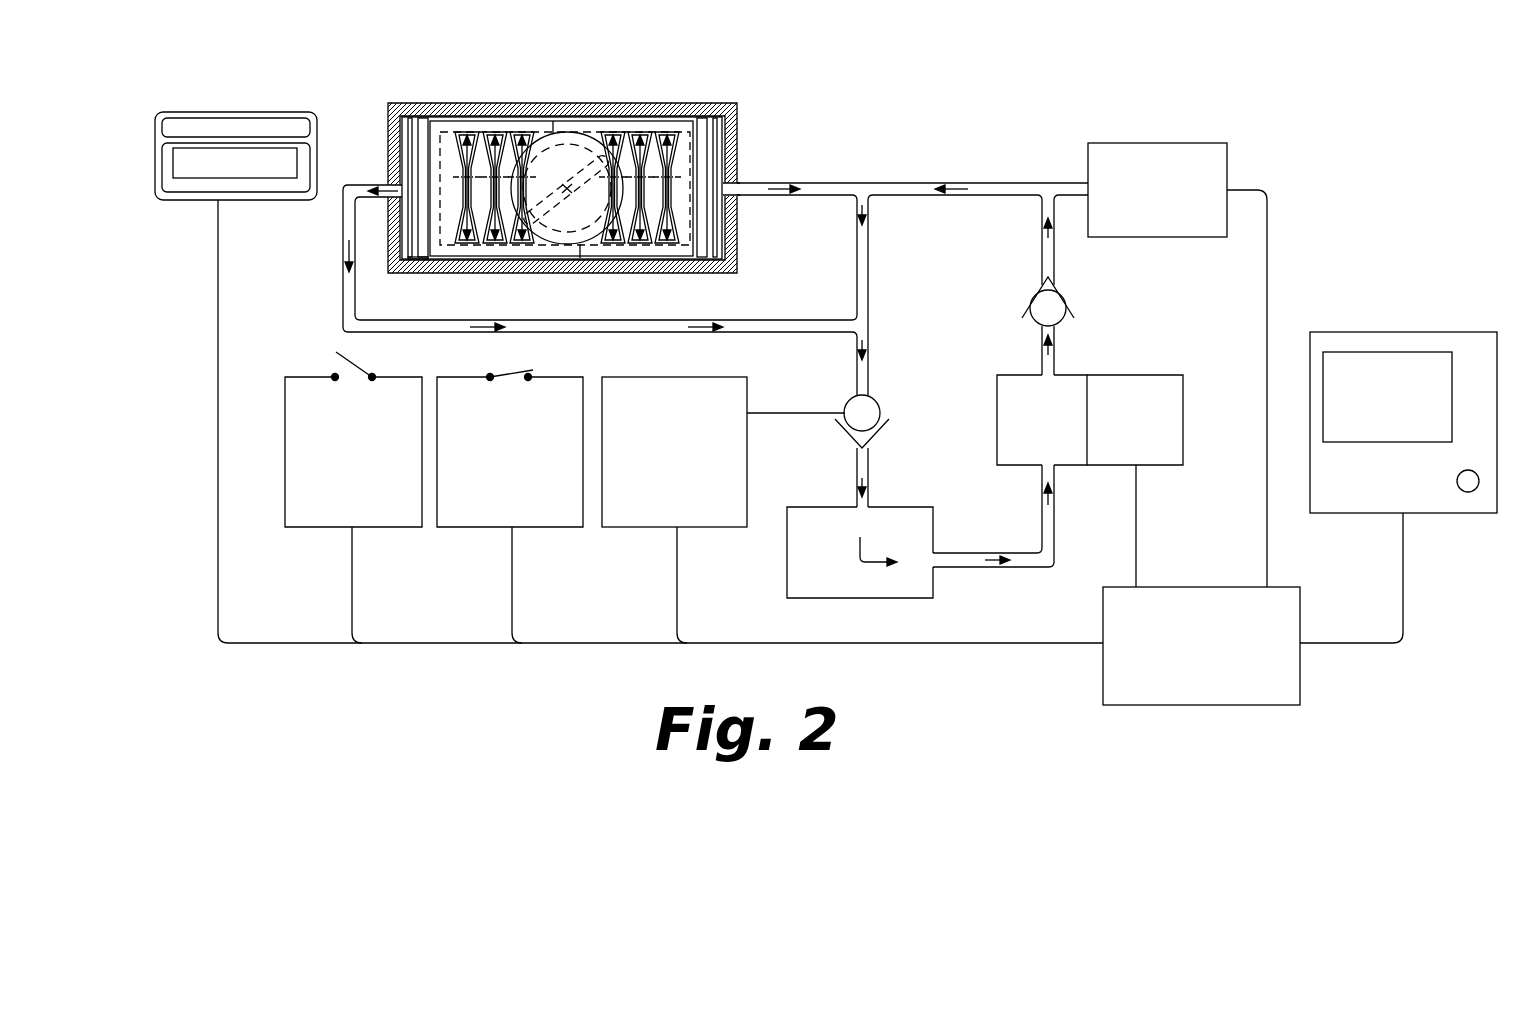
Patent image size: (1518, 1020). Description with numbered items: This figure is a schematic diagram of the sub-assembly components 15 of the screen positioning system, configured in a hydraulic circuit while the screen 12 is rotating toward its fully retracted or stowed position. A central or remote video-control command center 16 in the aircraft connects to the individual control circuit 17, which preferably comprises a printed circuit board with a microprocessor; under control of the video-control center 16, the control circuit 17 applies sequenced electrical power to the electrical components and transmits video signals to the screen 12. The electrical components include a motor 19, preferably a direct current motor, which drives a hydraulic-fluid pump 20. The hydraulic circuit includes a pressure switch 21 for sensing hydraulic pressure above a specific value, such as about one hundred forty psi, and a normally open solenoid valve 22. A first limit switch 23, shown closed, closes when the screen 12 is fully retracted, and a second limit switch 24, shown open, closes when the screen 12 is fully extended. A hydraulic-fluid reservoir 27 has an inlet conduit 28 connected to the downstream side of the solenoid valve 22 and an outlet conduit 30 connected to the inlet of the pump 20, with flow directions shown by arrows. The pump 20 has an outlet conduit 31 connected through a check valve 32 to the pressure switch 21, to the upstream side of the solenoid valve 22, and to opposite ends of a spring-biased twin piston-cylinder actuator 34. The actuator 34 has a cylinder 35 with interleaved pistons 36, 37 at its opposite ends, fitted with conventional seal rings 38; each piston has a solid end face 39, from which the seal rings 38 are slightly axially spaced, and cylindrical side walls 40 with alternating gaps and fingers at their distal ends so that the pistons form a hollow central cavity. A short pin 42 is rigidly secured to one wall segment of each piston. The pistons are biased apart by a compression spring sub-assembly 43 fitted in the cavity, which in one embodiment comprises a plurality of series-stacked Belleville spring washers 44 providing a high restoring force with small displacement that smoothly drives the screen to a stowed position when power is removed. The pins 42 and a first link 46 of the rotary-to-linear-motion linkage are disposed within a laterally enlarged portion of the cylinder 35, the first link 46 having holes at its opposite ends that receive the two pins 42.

The screen 12 is at (216, 172).
The sub-assembly components 15 is at (919, 150).
The video-control command center 16 is at (1380, 345).
The control circuit 17 is at (1205, 595).
The motor 19 is at (1150, 463).
The hydraulic-fluid pump 20 is at (1000, 452).
The pressure switch 21 is at (1180, 152).
The solenoid valve 22 is at (846, 404).
The first limit switch 23 is at (548, 530).
The second limit switch 24 is at (388, 530).
The hydraulic-fluid reservoir 27 is at (820, 520).
The inlet conduit 28 is at (870, 470).
The outlet conduit 30 is at (1058, 553).
The outlet conduit 31 is at (1060, 344).
The check valve 32 is at (1040, 316).
The spring-biased twin piston-cylinder actuator 34 is at (576, 172).
The cylinder 35 is at (738, 127).
The piston 36 is at (708, 245).
The piston 37 is at (409, 259).
The seal rings 38 is at (411, 125).
The solid end face 39 is at (385, 189).
The cylindrical side walls 40 is at (437, 128).
The pin 42 is at (567, 189).
The compression spring sub-assembly 43 is at (654, 244).
The Belleville spring washers 44 is at (522, 132).
The first link 46 is at (560, 186).